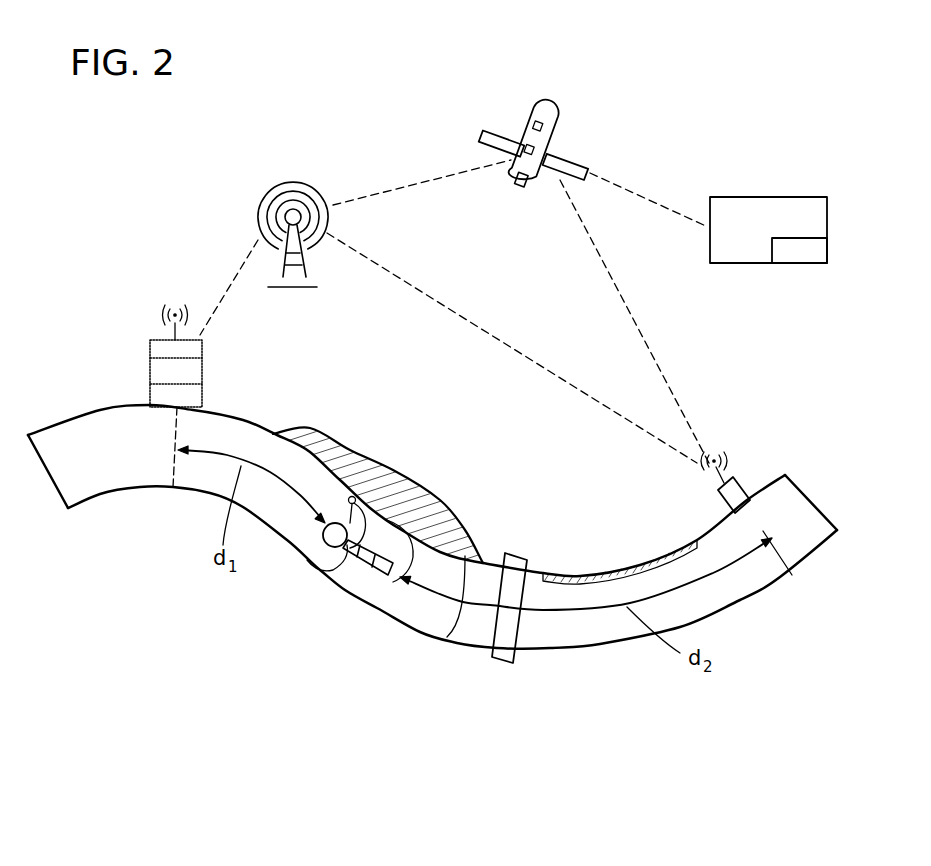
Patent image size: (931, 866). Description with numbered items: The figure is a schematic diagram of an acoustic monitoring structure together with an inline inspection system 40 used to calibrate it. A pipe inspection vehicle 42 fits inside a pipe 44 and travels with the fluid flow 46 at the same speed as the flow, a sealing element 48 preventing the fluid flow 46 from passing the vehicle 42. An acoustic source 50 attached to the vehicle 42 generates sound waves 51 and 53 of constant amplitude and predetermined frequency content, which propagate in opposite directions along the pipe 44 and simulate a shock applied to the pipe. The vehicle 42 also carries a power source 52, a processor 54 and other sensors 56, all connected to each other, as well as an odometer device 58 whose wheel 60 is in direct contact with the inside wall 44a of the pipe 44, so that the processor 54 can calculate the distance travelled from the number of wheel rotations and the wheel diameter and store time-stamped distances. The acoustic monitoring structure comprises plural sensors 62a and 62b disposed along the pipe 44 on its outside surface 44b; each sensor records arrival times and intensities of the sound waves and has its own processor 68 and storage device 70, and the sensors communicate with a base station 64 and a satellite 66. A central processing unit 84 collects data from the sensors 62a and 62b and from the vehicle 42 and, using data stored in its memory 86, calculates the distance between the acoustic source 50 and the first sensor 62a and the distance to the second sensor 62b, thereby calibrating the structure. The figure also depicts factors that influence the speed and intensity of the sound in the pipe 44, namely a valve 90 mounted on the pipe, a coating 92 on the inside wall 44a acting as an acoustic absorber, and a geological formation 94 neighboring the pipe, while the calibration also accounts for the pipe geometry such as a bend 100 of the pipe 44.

The inline inspection system 40 is at (360, 117).
The pipe inspection vehicle 42 is at (363, 580).
The pipe 44 is at (330, 474).
The inside wall 44a is at (268, 441).
The outside surface 44b is at (493, 558).
The fluid flow 46 is at (117, 472).
The sealing element 48 is at (382, 580).
The acoustic source 50 is at (327, 540).
The sound wave 51 is at (280, 515).
The power source 52 is at (405, 582).
The sound wave 53 is at (450, 636).
The processor 54 is at (352, 548).
The other sensors 56 is at (349, 541).
The odometer device 58 is at (359, 493).
The wheel 60 is at (351, 497).
The first sensor 62a is at (204, 359).
The second sensor 62b is at (747, 493).
The base station 64 is at (277, 185).
The satellite 66 is at (557, 137).
The processor 68 is at (150, 373).
The storage device 70 is at (150, 395).
The processing unit 84 is at (735, 197).
The memory 86 is at (810, 265).
The valve 90 is at (500, 664).
The coating 92 is at (618, 565).
The geological formation 94 is at (405, 492).
The bend 100 is at (186, 491).